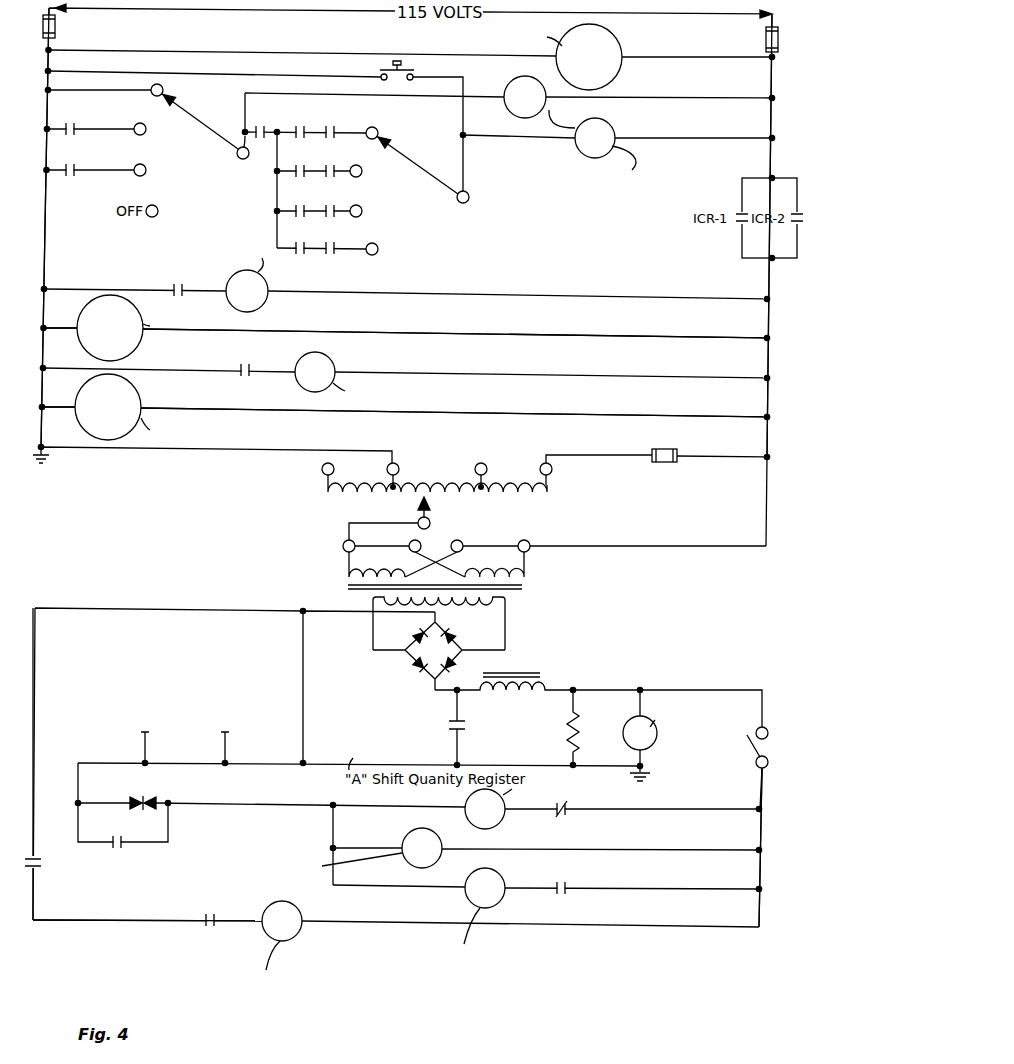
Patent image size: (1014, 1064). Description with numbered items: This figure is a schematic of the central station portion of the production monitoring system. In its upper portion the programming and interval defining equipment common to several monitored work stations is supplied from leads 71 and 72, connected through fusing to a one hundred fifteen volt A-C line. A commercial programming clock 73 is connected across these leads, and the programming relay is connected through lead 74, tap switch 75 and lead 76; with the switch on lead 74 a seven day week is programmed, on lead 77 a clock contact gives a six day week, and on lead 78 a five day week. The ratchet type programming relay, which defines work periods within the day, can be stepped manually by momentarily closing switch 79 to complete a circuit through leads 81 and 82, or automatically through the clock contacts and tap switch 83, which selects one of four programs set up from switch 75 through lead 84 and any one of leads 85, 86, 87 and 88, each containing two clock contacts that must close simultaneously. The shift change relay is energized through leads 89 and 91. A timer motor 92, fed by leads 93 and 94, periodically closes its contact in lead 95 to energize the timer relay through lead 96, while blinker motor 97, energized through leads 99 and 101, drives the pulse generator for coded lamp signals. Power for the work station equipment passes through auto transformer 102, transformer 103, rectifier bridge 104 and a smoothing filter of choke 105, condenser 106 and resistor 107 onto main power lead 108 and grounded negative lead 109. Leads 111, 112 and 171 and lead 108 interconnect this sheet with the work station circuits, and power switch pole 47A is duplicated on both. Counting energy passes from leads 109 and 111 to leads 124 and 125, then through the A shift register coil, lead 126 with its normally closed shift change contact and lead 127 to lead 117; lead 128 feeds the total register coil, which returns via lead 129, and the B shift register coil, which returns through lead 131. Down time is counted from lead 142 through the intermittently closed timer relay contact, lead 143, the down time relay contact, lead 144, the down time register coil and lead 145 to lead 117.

The lead 71 is at (46, 122).
The lead 72 is at (773, 119).
The programming clock 73 is at (411, 57).
The lead 74 is at (120, 94).
The tap switch 75 is at (229, 134).
The lead 76 is at (650, 99).
The lead 77 is at (95, 130).
The lead 78 is at (95, 171).
The switch 79 is at (416, 68).
The lead 81 is at (217, 76).
The lead 82 is at (672, 139).
The tap switch 83 is at (425, 171).
The lead 84 is at (256, 151).
The lead 85 is at (378, 133).
The lead 86 is at (362, 170).
The lead 87 is at (362, 211).
The lead 88 is at (370, 257).
The lead 89 is at (184, 296).
The lead 91 is at (287, 296).
The timer motor 92 is at (406, 328).
The lead 93 is at (70, 328).
The lead 94 is at (394, 334).
The lead 95 is at (190, 369).
The lead 96 is at (375, 375).
The blinker motor 97 is at (404, 407).
The lead 99 is at (70, 407).
The lead 101 is at (224, 407).
The auto transformer 102 is at (419, 490).
The transformer 103 is at (528, 588).
The rectifier bridge 104 is at (439, 651).
The choke 105 is at (512, 679).
The condenser 106 is at (466, 728).
The resistor 107 is at (566, 738).
The main power lead 108 is at (700, 690).
The negative lead 109 is at (308, 615).
The lead 111 is at (247, 763).
The lead 112 is at (223, 749).
The lead 117 is at (762, 790).
The lead 124 is at (78, 790).
The lead 125 is at (398, 809).
The lead 126 is at (520, 813).
The lead 127 is at (665, 809).
The lead 128 is at (336, 828).
The lead 129 is at (612, 850).
The lead 131 is at (511, 895).
The lead 142 is at (33, 820).
The lead 143 is at (33, 900).
The lead 144 is at (246, 929).
The lead 145 is at (312, 929).
The lead 171 is at (142, 757).
The power switch pole 47A is at (755, 760).